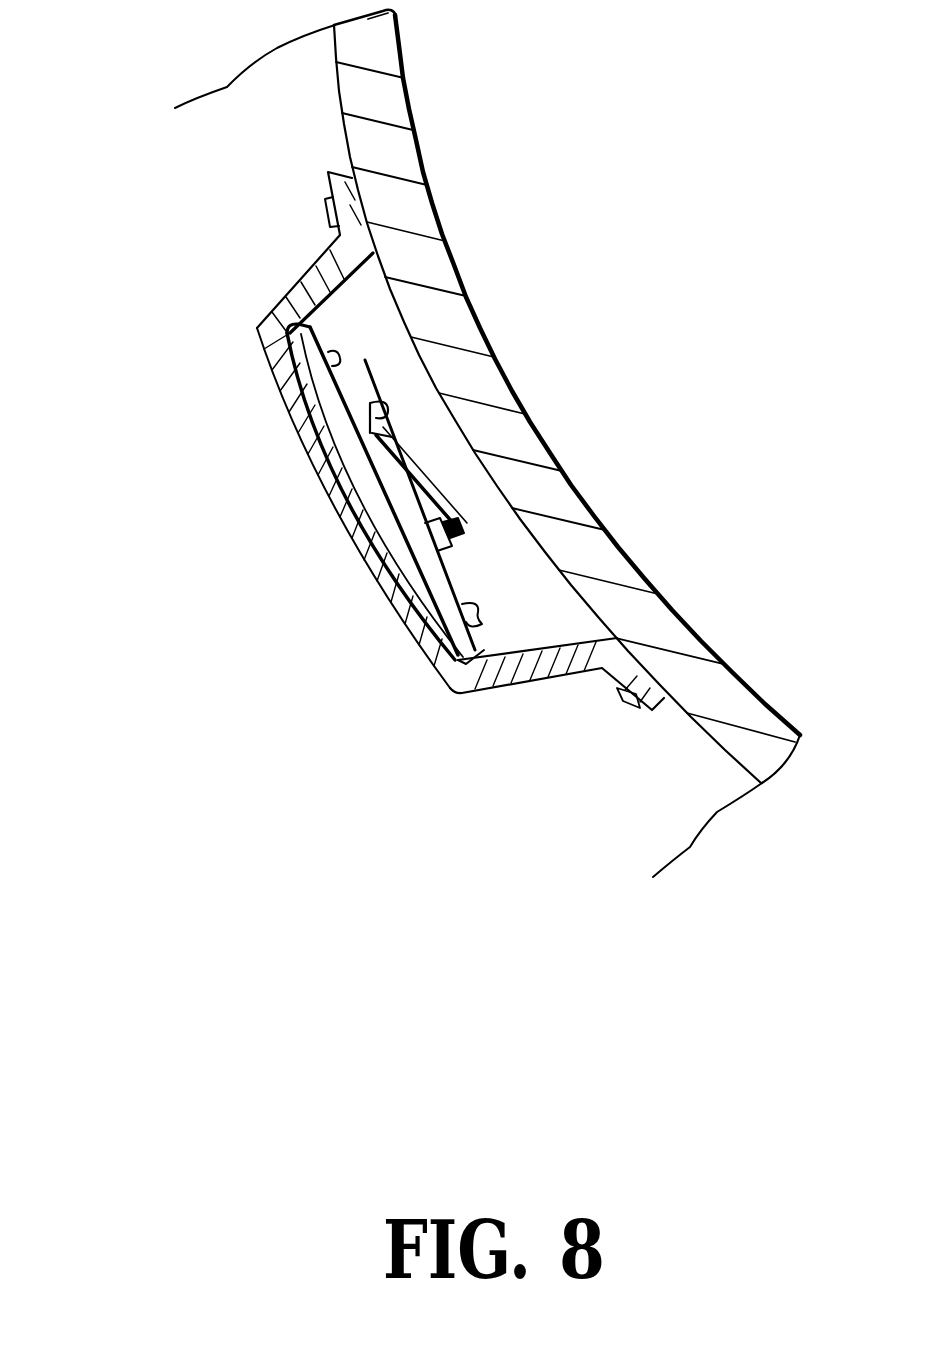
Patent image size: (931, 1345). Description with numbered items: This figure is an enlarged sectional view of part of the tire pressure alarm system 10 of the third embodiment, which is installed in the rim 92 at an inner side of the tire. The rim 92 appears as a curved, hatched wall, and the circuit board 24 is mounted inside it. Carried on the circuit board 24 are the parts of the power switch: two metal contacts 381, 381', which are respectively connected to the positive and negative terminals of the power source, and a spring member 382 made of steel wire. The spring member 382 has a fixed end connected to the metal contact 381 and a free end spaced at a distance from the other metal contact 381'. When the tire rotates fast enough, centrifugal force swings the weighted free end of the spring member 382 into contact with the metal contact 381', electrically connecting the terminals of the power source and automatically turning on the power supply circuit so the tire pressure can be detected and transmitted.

The tire pressure alarm system 10 is at (222, 330).
The circuit board 24 is at (370, 467).
The rim 92 is at (410, 100).
The metal contact 381 is at (473, 348).
The metal contact 381' is at (567, 493).
The spring member 382 is at (430, 467).